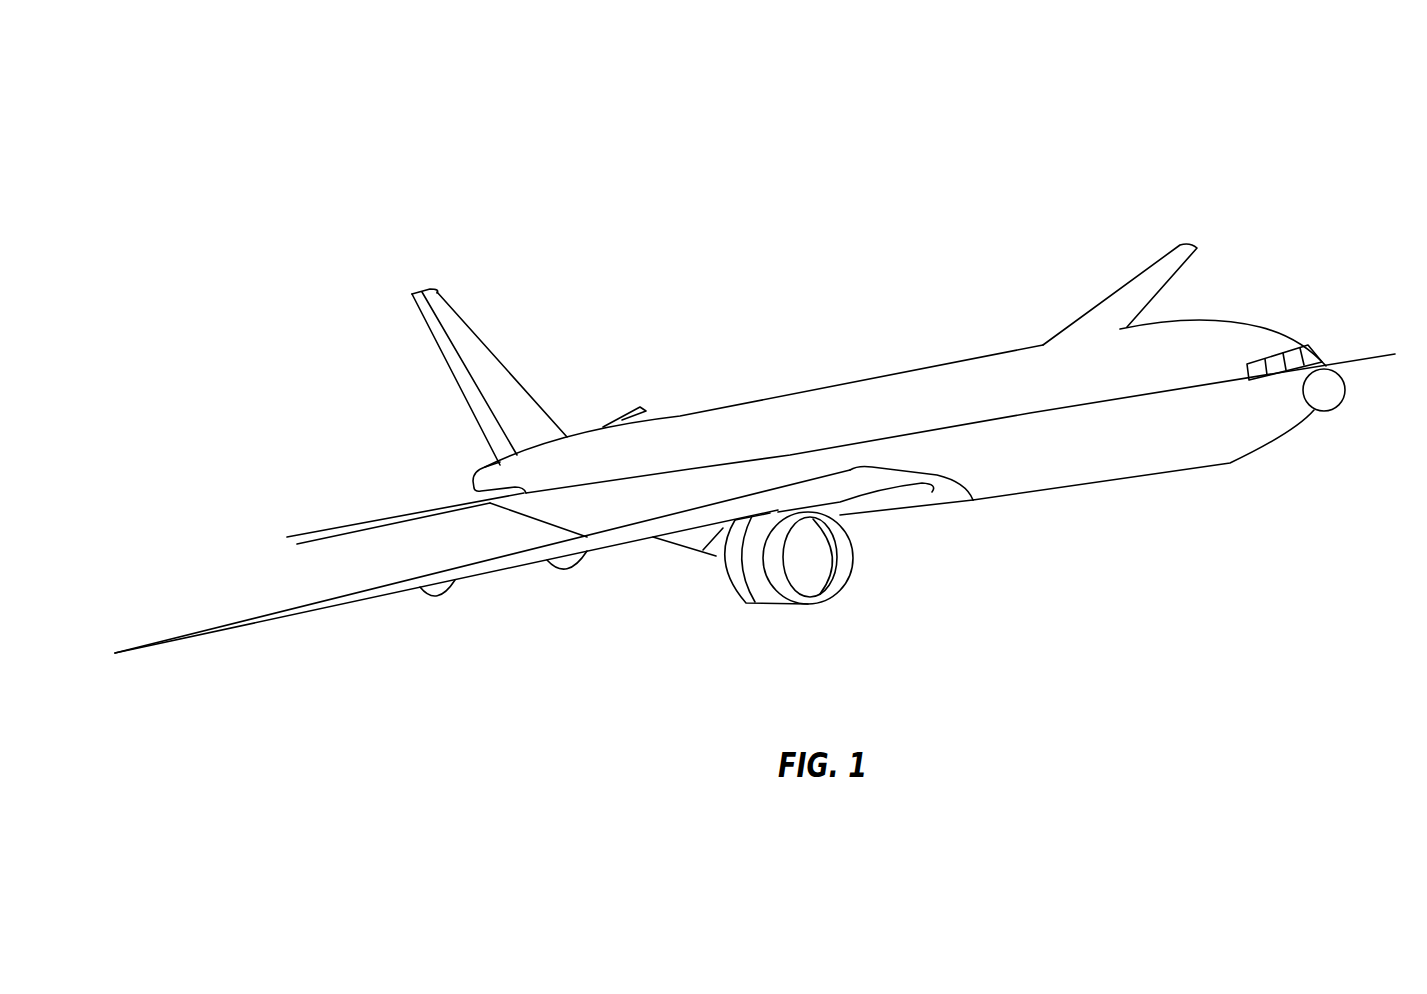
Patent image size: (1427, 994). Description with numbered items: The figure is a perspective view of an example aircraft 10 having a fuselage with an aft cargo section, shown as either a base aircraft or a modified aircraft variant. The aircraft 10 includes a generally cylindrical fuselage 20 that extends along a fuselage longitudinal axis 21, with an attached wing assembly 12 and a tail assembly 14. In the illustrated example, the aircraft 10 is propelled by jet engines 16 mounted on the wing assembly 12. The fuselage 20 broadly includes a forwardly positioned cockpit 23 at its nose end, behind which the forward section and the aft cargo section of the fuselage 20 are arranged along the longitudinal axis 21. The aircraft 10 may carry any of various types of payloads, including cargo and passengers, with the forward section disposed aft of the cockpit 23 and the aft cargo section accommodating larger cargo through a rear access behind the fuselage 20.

The aircraft 10 is at (1298, 201).
The wing assembly 12 is at (1103, 257).
The tail assembly 14 is at (432, 412).
The jet engines 16 is at (757, 570).
The fuselage 20 is at (840, 402).
The fuselage longitudinal axis 21 is at (1370, 355).
The cockpit 23 is at (1247, 333).